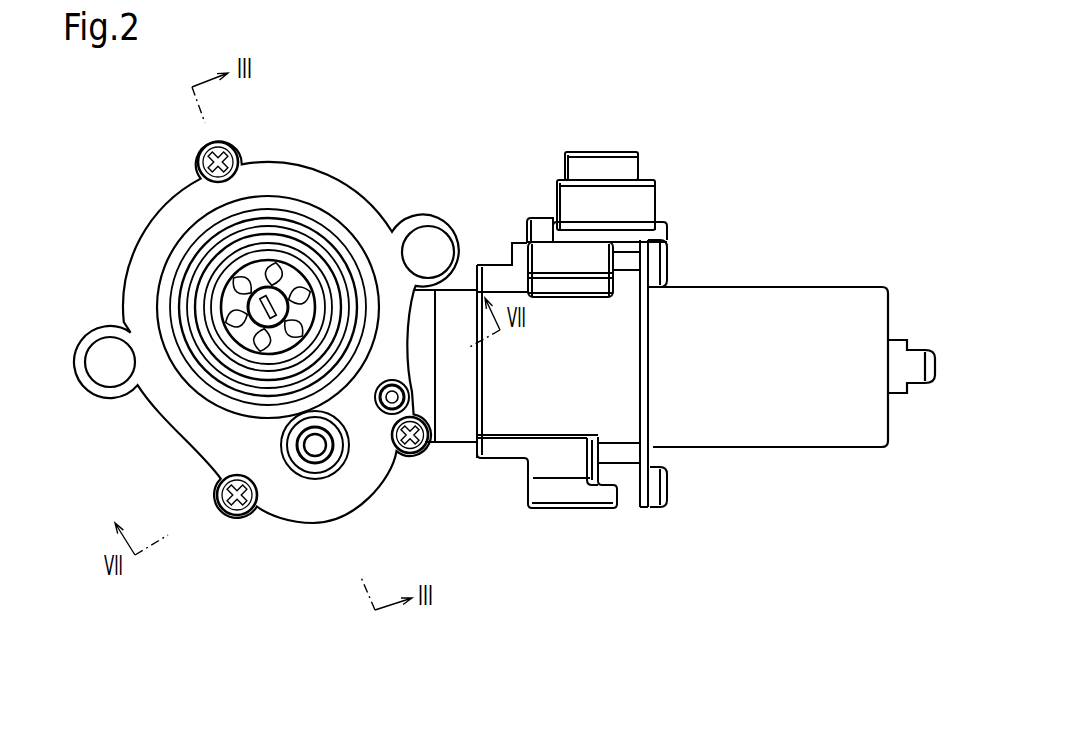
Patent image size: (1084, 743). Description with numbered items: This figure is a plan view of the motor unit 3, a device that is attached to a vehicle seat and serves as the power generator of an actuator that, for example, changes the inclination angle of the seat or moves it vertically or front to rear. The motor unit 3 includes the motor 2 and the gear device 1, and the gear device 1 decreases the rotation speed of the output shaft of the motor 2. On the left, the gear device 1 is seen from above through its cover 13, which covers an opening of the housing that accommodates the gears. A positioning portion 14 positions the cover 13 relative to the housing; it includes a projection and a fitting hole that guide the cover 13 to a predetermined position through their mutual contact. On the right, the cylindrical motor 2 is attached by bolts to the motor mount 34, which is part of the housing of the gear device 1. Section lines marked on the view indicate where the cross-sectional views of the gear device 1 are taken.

The gear device 1 is at (137, 150).
The motor 2 is at (768, 287).
The motor unit 3 is at (662, 108).
The cover 13 is at (337, 186).
The positioning portion 14 is at (382, 418).
The motor mount 34 is at (630, 508).